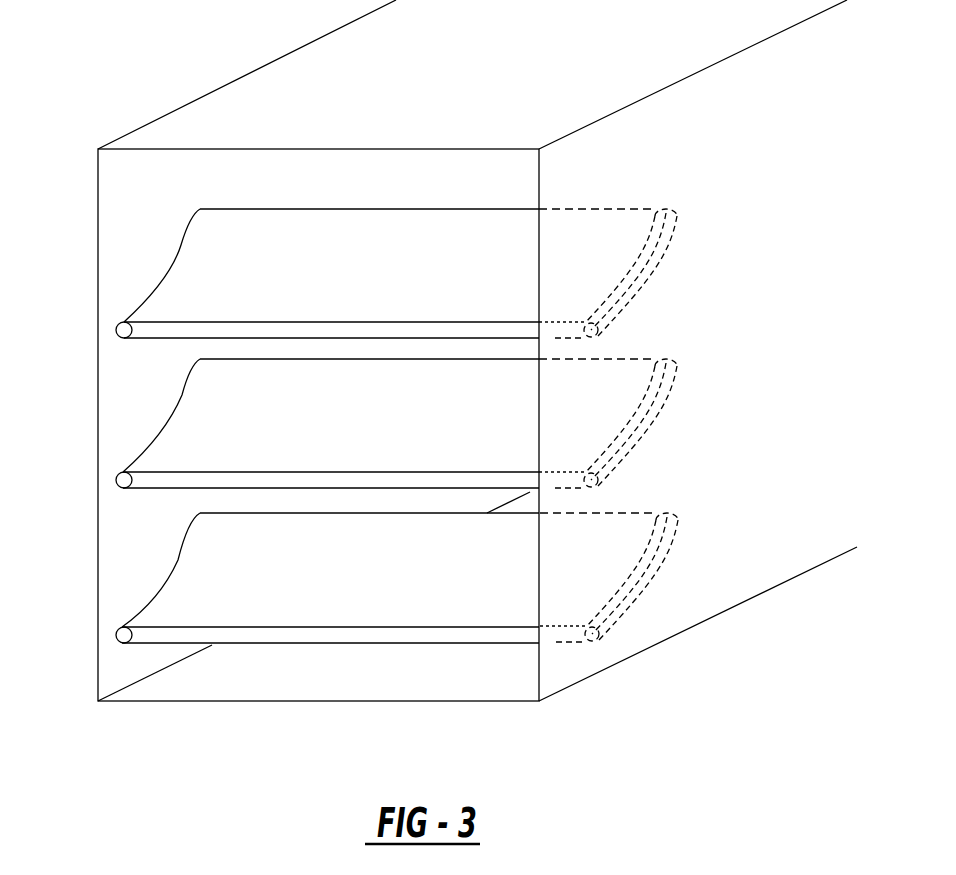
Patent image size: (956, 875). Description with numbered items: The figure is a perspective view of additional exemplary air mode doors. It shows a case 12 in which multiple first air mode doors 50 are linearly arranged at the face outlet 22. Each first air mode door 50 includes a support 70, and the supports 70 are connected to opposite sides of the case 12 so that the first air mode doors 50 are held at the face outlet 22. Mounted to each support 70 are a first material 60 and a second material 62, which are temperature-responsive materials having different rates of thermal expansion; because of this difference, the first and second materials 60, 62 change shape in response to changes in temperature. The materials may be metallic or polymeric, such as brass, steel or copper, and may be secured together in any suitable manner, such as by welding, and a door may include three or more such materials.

The case 12 is at (243, 77).
The face outlet 22 is at (145, 210).
The first air mode door 50 is at (210, 277).
The first material 60 is at (658, 233).
The second material 62 is at (662, 265).
The support 70 is at (598, 337).